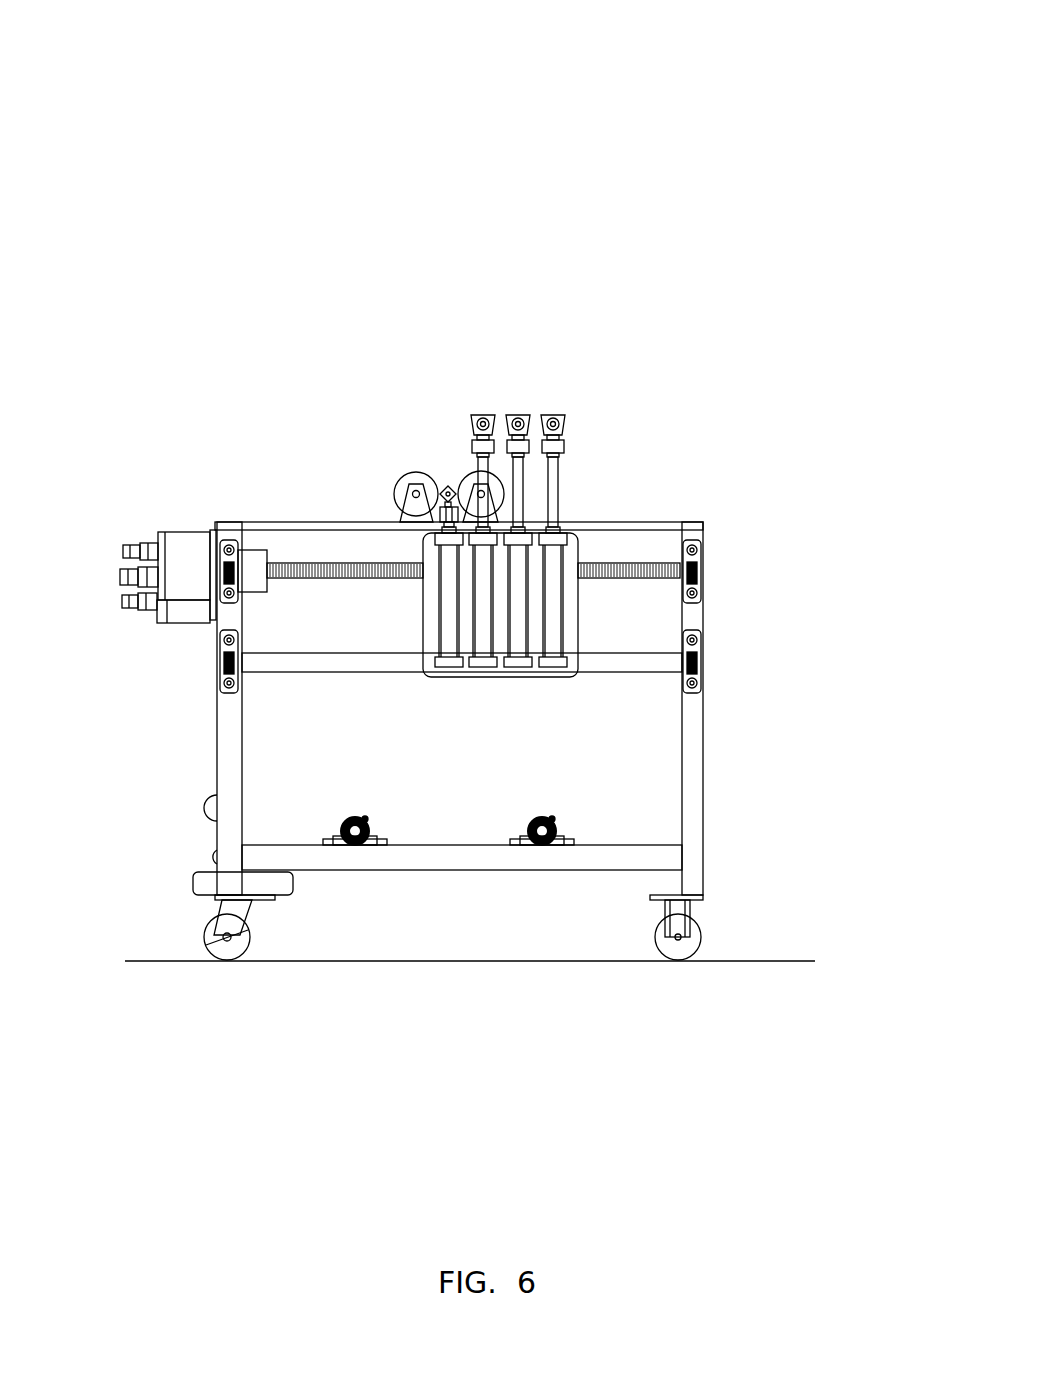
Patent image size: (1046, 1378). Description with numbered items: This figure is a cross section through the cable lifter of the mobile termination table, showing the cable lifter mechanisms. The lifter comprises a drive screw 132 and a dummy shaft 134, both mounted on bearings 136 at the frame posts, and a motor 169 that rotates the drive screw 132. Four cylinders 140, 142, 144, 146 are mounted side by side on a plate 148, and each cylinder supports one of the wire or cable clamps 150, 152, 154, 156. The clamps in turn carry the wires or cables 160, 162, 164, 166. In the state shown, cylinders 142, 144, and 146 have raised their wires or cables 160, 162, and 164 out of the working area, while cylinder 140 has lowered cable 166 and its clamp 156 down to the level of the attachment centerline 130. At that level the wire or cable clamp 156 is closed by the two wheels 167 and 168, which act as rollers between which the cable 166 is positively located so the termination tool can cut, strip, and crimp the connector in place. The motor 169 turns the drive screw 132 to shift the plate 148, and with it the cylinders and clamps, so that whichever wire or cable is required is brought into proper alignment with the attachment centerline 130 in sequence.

The attachment centerline 130 is at (483, 417).
The drive screw 132 is at (312, 563).
The dummy shaft 134 is at (343, 660).
The bearings 136 is at (690, 533).
The cylinder 140 is at (455, 663).
The cylinder 142 is at (483, 663).
The cylinder 144 is at (517, 663).
The cylinder 146 is at (552, 663).
The plate 148 is at (432, 675).
The wire or cable clamp 150 is at (552, 417).
The wire or cable clamp 152 is at (520, 417).
The wire or cable clamp 154 is at (488, 417).
The wire or cable clamp 156 is at (450, 490).
The wire or cable 160 is at (543, 417).
The wire or cable 162 is at (511, 417).
The wire or cable 164 is at (476, 417).
The wire or cable 166 is at (446, 488).
The wheel 167 is at (422, 487).
The wheel 168 is at (495, 483).
The motor 169 is at (257, 553).